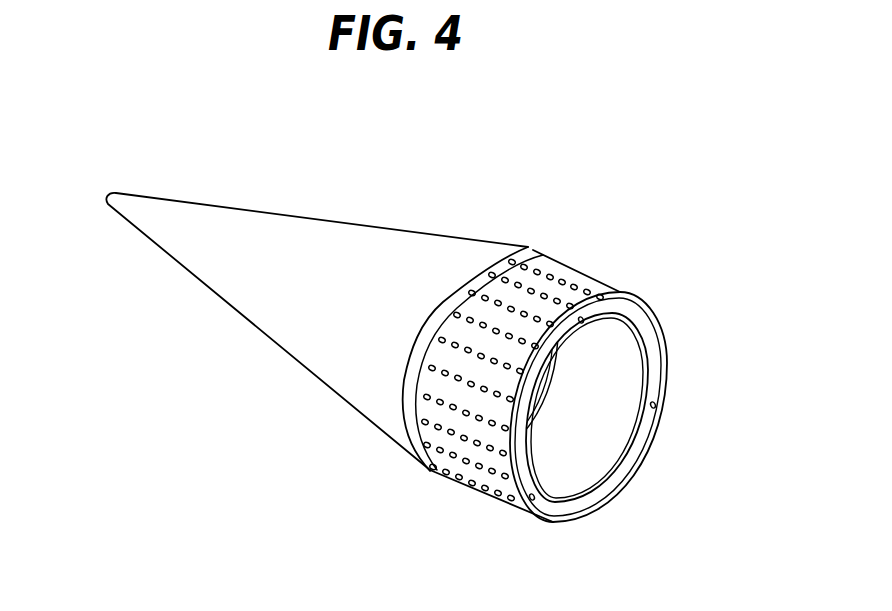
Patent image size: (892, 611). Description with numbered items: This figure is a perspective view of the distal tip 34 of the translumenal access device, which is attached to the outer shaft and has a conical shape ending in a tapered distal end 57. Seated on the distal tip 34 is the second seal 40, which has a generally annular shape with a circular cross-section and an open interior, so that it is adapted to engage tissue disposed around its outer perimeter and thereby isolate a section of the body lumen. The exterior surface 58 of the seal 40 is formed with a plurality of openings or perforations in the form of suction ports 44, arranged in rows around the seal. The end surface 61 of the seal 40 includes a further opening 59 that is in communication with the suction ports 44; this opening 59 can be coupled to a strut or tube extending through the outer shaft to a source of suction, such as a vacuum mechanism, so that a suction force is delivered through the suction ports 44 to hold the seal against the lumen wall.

The distal tip 34 is at (192, 402).
The tapered distal end 57 is at (107, 197).
The exterior surface 58 is at (590, 262).
The suction ports 44 is at (462, 443).
The second seal 40 is at (621, 287).
The end surface 61 is at (640, 456).
The opening 59 is at (656, 405).